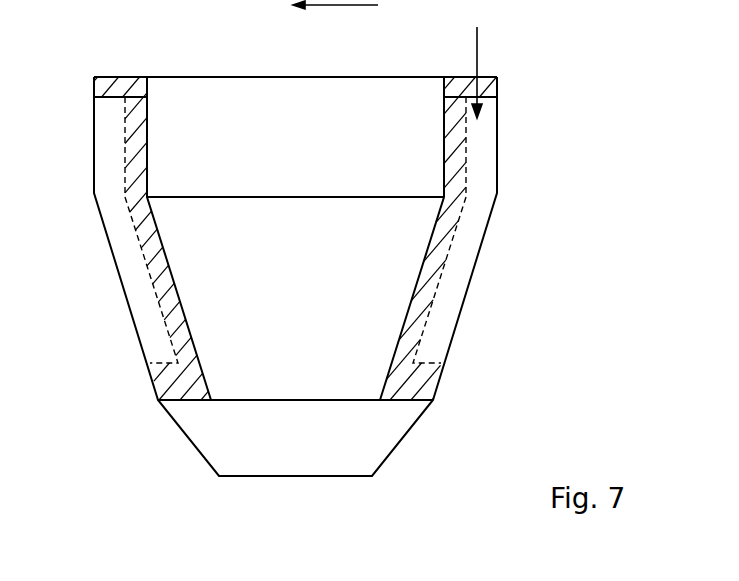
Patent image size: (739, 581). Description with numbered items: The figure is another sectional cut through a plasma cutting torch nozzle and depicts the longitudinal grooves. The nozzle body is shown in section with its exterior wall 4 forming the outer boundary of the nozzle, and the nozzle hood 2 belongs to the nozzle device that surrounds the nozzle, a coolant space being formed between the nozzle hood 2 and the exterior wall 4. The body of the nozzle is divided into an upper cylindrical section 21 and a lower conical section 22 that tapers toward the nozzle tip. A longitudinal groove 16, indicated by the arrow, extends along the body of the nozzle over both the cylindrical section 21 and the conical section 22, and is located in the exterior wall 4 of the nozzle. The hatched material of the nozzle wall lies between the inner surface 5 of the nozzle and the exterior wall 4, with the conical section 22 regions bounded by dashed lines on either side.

The nozzle hood 2 is at (210, 97).
The exterior wall 4 is at (497, 152).
The inner wall 5 is at (443, 125).
The longitudinal groove 16 is at (479, 59).
The cylindrical section 21 is at (480, 183).
The conical section 22 is at (120, 255).